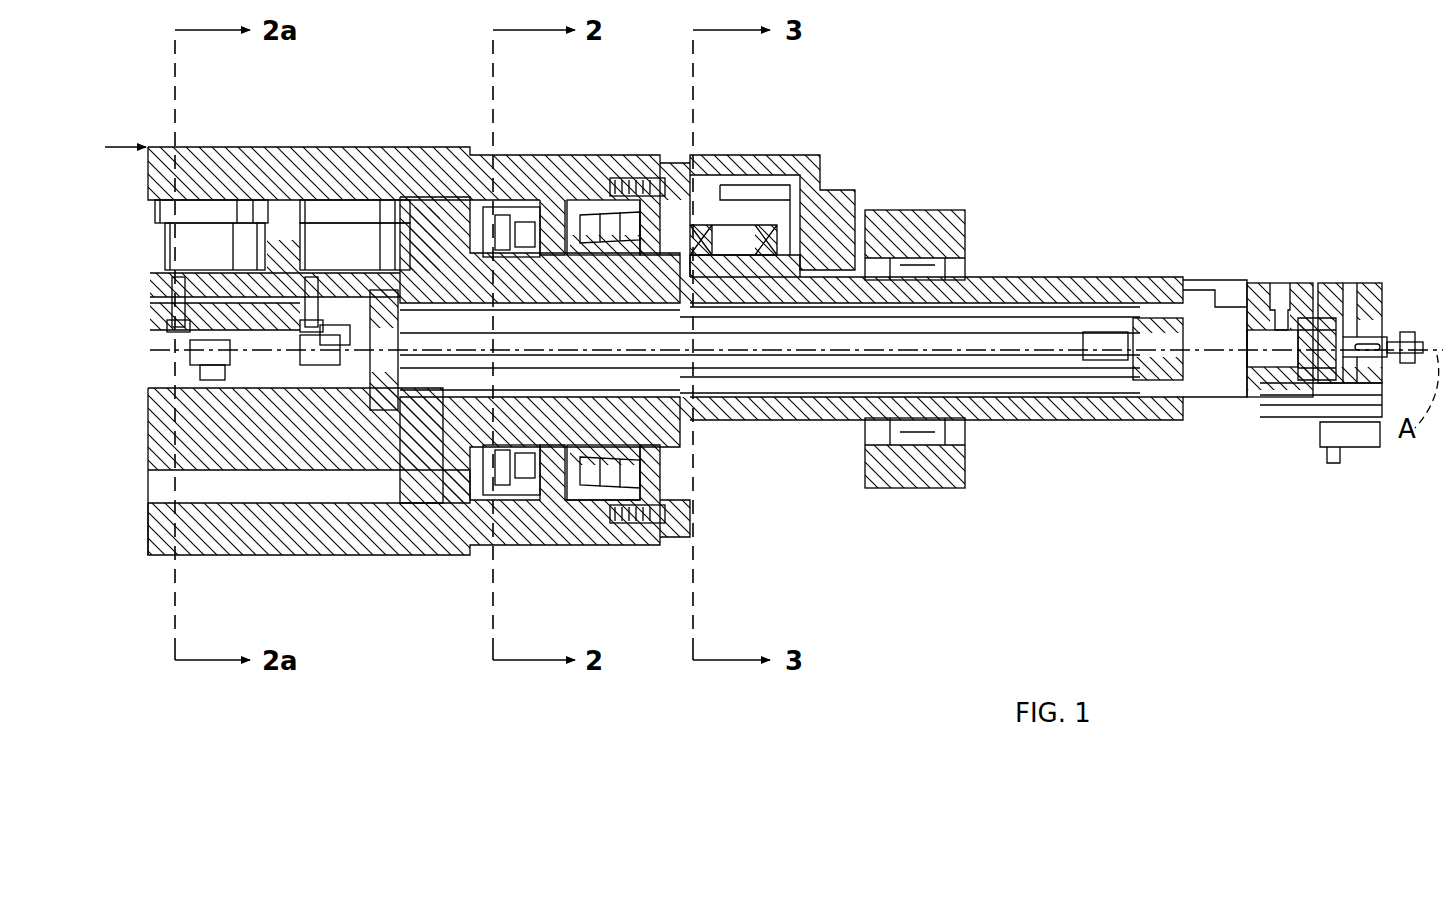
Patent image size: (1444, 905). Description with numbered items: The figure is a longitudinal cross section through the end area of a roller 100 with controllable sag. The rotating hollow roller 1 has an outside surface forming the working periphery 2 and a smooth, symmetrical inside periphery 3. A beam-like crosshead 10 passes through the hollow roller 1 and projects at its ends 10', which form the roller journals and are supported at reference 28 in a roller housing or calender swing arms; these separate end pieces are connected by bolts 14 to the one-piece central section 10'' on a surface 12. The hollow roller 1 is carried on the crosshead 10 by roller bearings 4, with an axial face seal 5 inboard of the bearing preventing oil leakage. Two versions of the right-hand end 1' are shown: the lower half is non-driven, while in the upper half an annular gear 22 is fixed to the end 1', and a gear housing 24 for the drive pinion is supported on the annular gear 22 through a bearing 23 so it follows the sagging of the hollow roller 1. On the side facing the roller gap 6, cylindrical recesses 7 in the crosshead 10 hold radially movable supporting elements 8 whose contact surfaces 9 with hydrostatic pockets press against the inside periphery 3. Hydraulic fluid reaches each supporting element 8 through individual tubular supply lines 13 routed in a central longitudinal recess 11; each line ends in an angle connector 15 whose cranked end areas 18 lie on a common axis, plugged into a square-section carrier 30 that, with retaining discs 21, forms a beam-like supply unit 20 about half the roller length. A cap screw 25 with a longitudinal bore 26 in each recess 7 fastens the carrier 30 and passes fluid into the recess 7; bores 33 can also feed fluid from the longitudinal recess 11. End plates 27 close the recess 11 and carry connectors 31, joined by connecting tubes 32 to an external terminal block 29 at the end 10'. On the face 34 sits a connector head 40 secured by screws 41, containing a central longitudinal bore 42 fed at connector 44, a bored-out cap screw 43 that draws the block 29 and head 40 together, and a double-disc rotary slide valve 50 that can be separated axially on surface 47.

The hollow roller 1 is at (347, 118).
The right-hand end of the hollow roller 1' is at (660, 122).
The working periphery 2 is at (318, 160).
The inside periphery 3 is at (160, 213).
The roller bearings 4 is at (603, 497).
The axial face seal 5 is at (541, 208).
The roller gap 6 is at (140, 145).
The cylindrical recesses 7 is at (268, 200).
The supporting elements 8 is at (235, 200).
The outer contact surfaces 9 is at (213, 210).
The crosshead 10 is at (123, 502).
The ends of the crosshead 10' is at (1091, 258).
The central section of the crosshead 10'' is at (221, 525).
The longitudinal recess 11 is at (205, 390).
The surface 12 is at (478, 437).
The supply lines 13 is at (688, 470).
The bolts 14 is at (527, 517).
The angle connector 15 is at (212, 420).
The cranked end areas 18 is at (175, 358).
The supply unit 20 is at (945, 343).
The retaining discs 21 is at (617, 313).
The annular gear 22 is at (702, 250).
The bearing 23 is at (742, 260).
The gear housing 24 is at (795, 155).
The cap screw 25 is at (180, 297).
The longitudinal bore 26 is at (170, 285).
The end plates 27 is at (387, 345).
The support location 28 is at (915, 488).
The terminal block 29 is at (1165, 390).
The carrier 30 is at (175, 322).
The connectors 31 is at (413, 330).
The connecting tubes 32 is at (1020, 345).
The bores 33 is at (210, 273).
The face 34 is at (1190, 280).
The connector head 40 is at (1400, 494).
The screws 41 is at (1212, 405).
The central longitudinal bore 42 is at (1300, 352).
The bored-out cap screw 43 is at (1272, 345).
The connector 44 is at (1275, 285).
The surface 47 is at (1343, 280).
The double-disc rotary slide valve 50 is at (1383, 226).
The roller 100 is at (1097, 148).